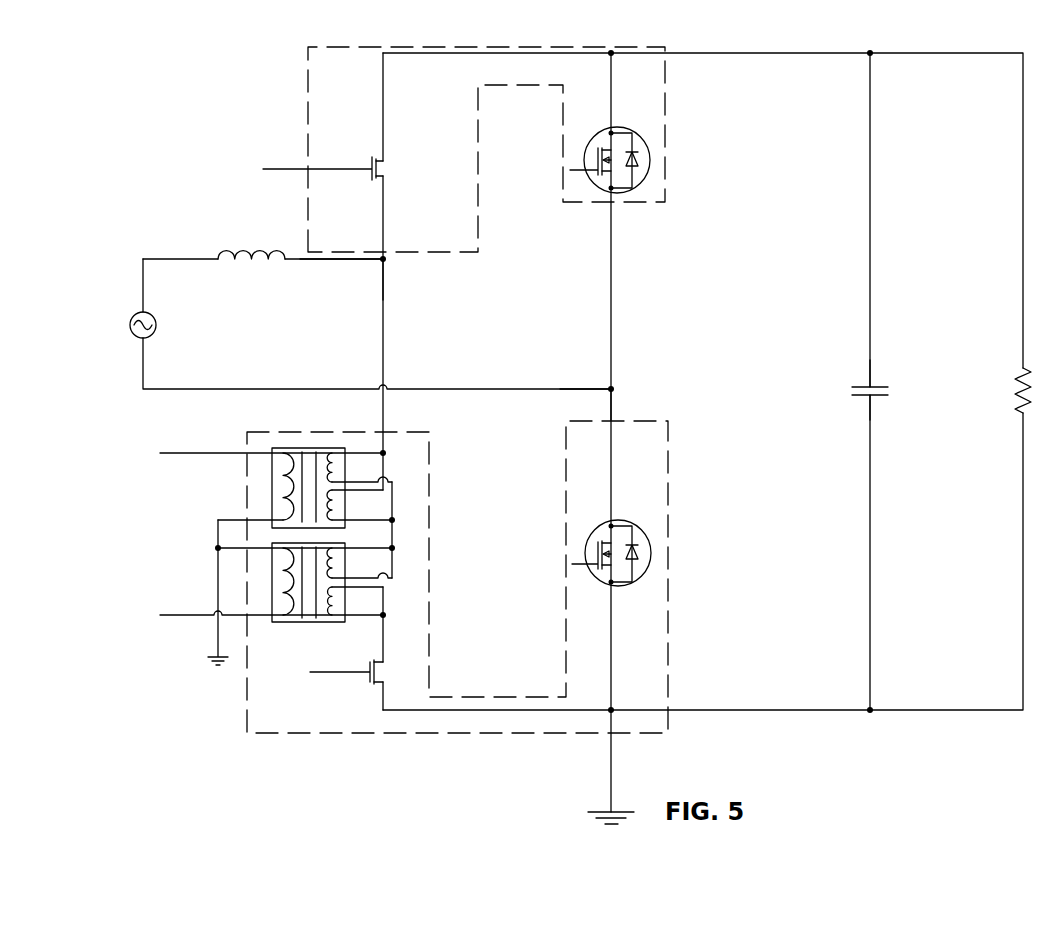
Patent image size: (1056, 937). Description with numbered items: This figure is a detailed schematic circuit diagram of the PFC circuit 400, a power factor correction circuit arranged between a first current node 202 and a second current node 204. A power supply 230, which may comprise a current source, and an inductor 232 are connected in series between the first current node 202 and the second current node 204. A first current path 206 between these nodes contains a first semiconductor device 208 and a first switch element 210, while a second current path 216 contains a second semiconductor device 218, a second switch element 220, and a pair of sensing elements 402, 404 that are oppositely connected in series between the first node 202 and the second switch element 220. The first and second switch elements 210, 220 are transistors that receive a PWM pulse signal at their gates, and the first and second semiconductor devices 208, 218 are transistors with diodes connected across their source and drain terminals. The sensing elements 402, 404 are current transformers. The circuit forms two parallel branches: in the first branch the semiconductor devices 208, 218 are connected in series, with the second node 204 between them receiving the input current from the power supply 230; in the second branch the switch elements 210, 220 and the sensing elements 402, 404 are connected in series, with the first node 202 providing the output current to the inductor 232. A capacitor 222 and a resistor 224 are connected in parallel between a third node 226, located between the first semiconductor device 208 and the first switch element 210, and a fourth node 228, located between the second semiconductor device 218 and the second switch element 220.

The PFC circuit 400 is at (203, 96).
The first current node 202 is at (388, 263).
The second current node 204 is at (620, 383).
The first current path 206 is at (520, 149).
The first semiconductor device 208 is at (653, 155).
The first switch element 210 is at (386, 168).
The second current path 216 is at (465, 577).
The second semiconductor device 218 is at (645, 535).
The second switch element 220 is at (380, 682).
The capacitor 222 is at (858, 373).
The resistor 224 is at (1005, 383).
The third node 226 is at (882, 63).
The fourth node 228 is at (880, 703).
The power supply 230 is at (165, 328).
The inductor 232 is at (238, 245).
The first sensing element 402 is at (272, 488).
The second sensing element 404 is at (297, 620).